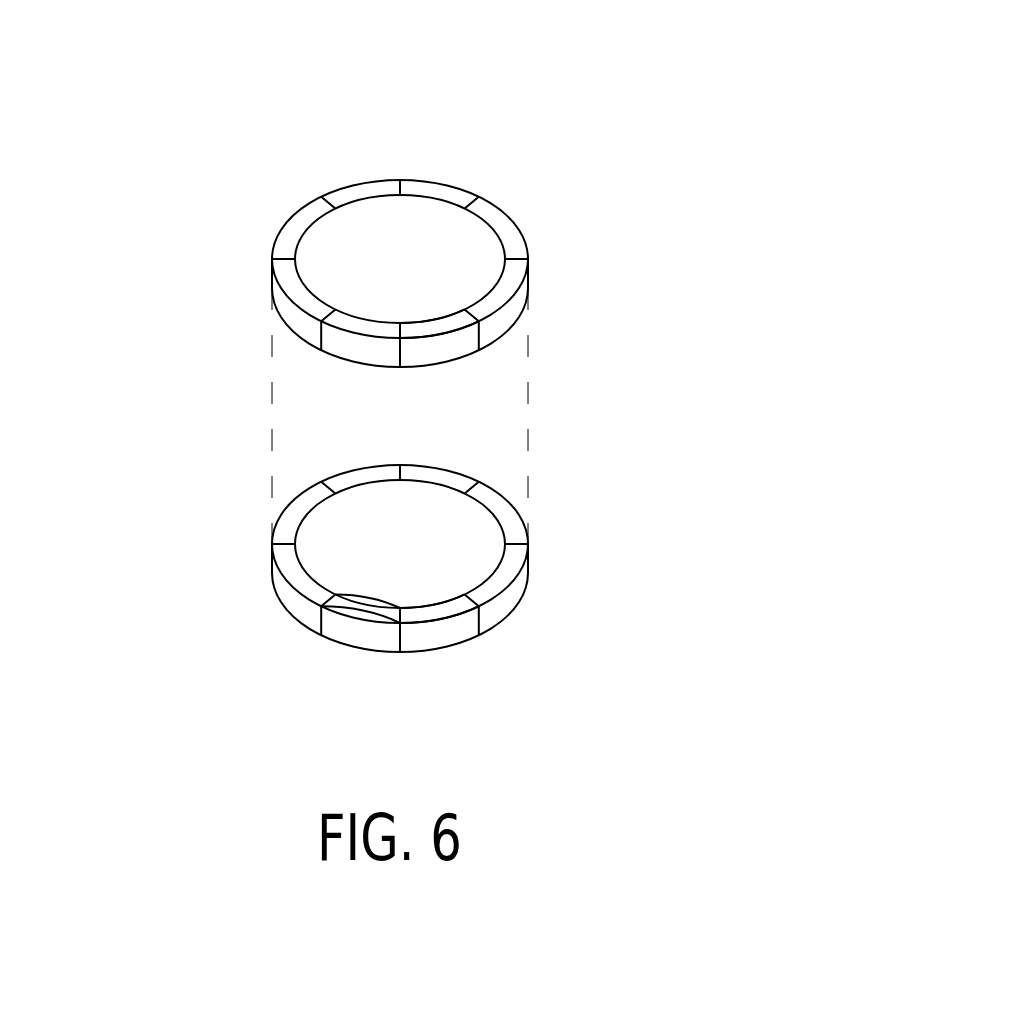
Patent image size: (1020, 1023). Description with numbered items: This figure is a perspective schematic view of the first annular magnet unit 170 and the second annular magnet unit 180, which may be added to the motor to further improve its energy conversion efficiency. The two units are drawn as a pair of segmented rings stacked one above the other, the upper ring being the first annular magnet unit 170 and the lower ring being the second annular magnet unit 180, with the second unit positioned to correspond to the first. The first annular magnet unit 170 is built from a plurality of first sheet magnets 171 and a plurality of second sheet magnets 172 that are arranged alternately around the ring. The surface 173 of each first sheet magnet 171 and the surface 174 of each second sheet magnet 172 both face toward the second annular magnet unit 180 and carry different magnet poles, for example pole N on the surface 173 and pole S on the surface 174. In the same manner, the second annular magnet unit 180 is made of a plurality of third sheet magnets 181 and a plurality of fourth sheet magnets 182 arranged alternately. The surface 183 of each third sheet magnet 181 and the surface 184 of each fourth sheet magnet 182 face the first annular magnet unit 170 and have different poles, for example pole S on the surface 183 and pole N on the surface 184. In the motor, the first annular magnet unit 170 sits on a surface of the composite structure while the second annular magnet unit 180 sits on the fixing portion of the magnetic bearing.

The first annular magnet unit 170 is at (428, 283).
The first sheet magnet 171 is at (432, 327).
The second sheet magnet 172 is at (333, 316).
The surface 173 is at (465, 373).
The surface 174 is at (337, 376).
The second annular magnet unit 180 is at (453, 575).
The third sheet magnet 181 is at (438, 613).
The fourth sheet magnet 182 is at (353, 608).
The surface 183 is at (474, 605).
The surface 184 is at (367, 591).